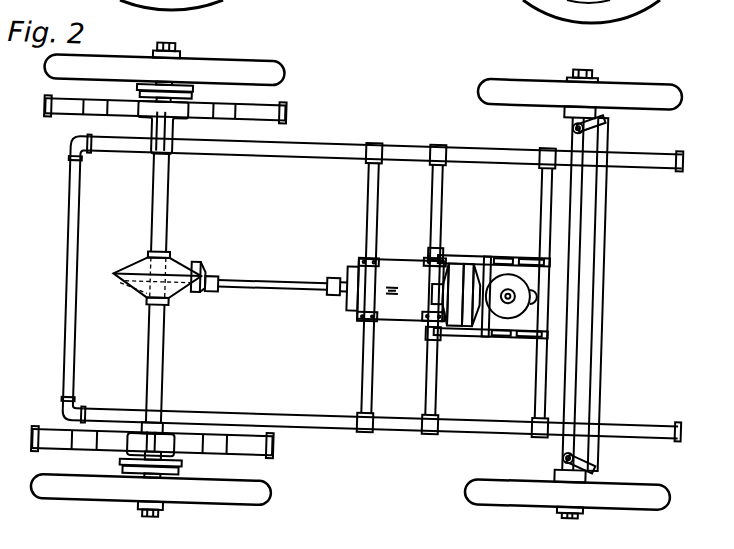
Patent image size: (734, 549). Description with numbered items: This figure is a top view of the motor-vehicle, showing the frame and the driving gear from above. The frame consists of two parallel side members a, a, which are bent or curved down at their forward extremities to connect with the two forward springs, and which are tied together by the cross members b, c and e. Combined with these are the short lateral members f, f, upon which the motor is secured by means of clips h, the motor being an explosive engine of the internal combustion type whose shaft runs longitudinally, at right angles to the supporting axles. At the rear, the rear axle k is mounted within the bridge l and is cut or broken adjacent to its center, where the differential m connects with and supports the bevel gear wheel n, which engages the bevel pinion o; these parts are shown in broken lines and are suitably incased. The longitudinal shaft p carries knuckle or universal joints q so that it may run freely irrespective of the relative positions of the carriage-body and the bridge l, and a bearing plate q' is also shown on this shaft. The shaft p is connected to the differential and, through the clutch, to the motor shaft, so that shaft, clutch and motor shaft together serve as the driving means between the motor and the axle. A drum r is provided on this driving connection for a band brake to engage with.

The side member a is at (448, 210).
The cross member b is at (78, 278).
The cross member c is at (372, 213).
The cross member e is at (543, 205).
The short lateral member f is at (469, 255).
The clip h is at (518, 298).
The rear axle k is at (154, 529).
The bridge l is at (161, 289).
The differential m is at (172, 269).
The bevel gear wheel n is at (170, 294).
The bevel pinion o is at (188, 297).
The longitudinal shaft p is at (282, 295).
The universal joint q is at (215, 273).
The bearing plate q' is at (401, 290).
The drum r is at (352, 308).